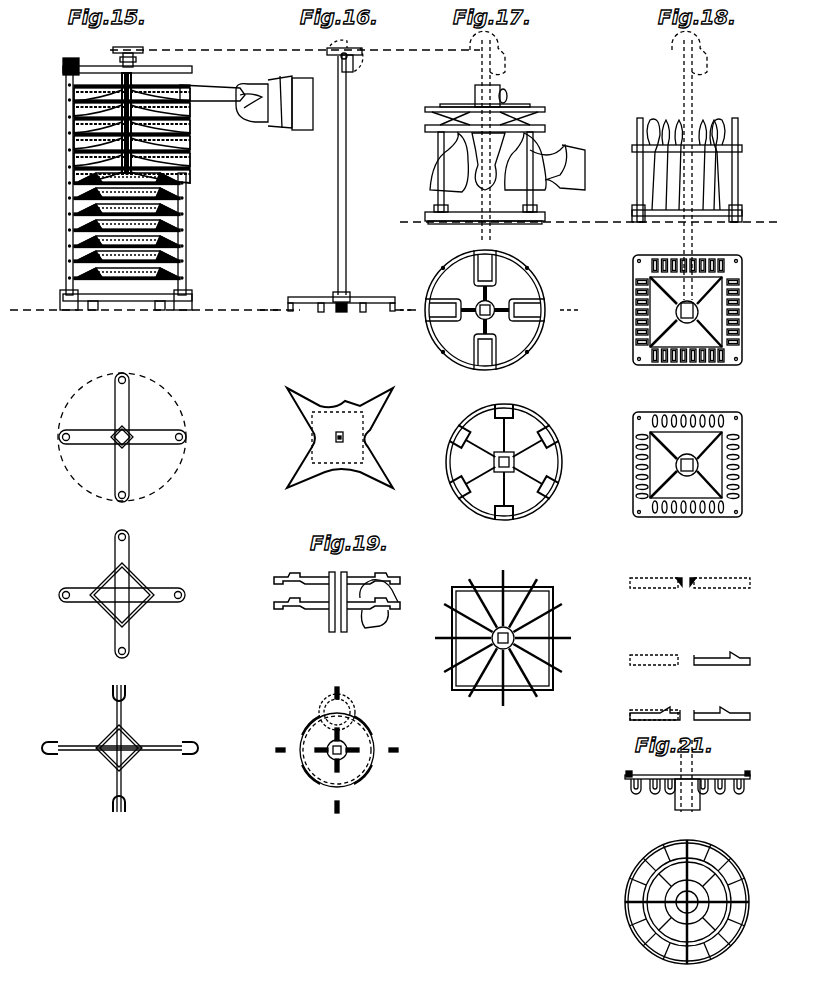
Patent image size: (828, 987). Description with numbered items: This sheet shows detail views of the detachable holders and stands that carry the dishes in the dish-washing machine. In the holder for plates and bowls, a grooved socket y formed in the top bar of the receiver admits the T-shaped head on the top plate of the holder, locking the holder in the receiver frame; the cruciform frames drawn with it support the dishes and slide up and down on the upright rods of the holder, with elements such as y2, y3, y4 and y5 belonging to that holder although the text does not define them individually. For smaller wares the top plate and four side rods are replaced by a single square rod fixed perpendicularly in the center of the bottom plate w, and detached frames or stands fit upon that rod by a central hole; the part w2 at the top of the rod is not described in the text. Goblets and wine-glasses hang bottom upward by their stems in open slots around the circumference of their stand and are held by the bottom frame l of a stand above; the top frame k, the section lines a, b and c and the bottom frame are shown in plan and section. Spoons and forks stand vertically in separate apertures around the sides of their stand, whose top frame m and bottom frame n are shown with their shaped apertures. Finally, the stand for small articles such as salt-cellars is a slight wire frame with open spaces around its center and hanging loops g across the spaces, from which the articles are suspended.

In FIG. 15, the grooved socket y is at (130, 180).
In FIG. 15, the base cross y2 is at (125, 594).
In FIG. 15, the top handle y3 is at (128, 52).
In FIG. 15, the shelf/tray y4 is at (132, 176).
In FIG. 15, the hook end y5 is at (120, 749).
In FIG. 16, the bottom plate w is at (338, 179).
In FIG. 16, the cap w2 is at (345, 55).
In FIG. 17, the top frame k is at (483, 113).
In FIG. 17, the bottom frame l is at (481, 163).
In FIG. 18, the top frame of spoon rack m is at (685, 170).
In FIG. 18, the bottom frame of spoon rack n is at (684, 213).
In FIG. 17, the section line a. a is at (679, 598).
In FIG. 17, the section line b. b is at (677, 668).
In FIG. 17, the jet pipes c is at (676, 722).
In FIG. 21, the hook bar g is at (687, 790).